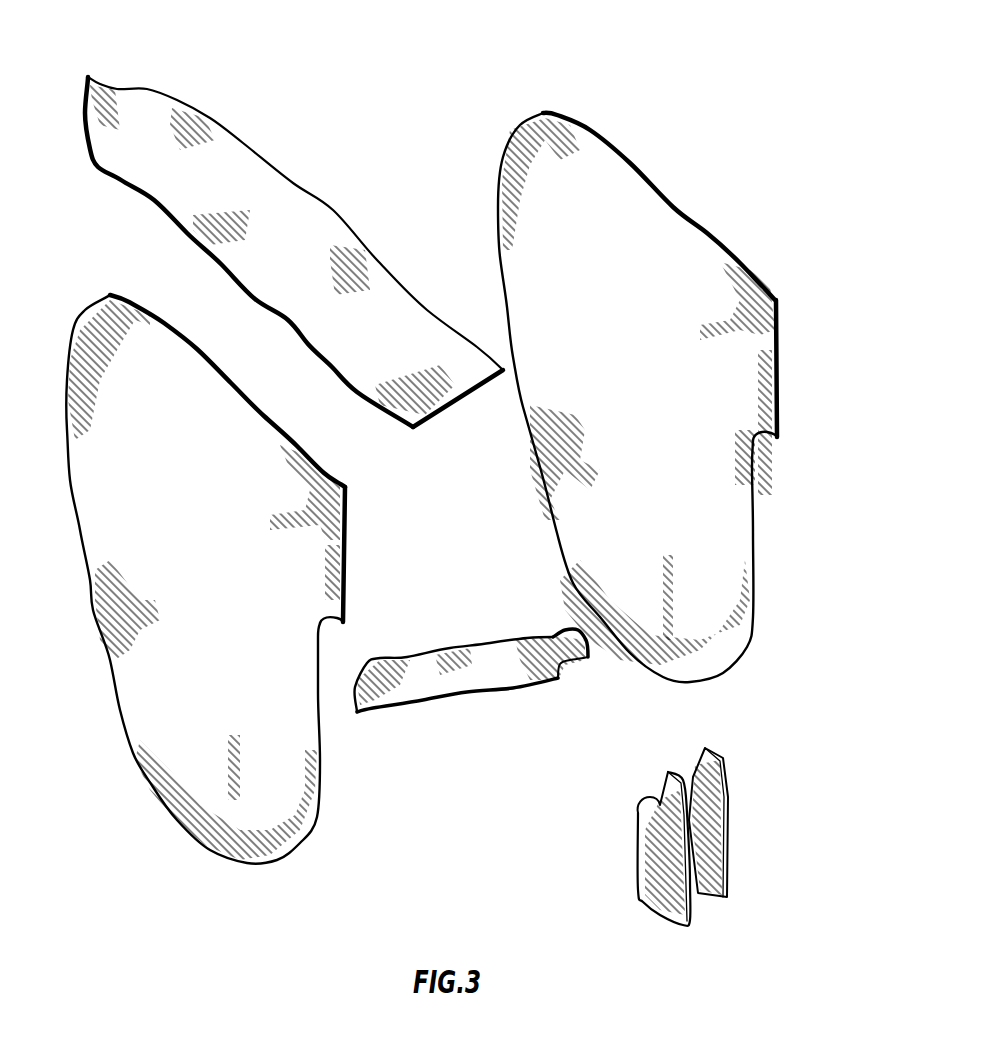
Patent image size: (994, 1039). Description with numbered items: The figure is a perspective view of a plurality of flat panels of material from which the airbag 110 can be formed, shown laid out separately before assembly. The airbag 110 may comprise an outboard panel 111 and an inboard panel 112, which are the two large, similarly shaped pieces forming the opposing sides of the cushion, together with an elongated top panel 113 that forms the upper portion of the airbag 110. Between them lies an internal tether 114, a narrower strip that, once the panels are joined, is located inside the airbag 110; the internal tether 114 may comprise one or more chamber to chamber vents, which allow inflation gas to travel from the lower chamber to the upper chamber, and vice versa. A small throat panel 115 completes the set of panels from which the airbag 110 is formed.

The airbag 110 is at (312, 83).
The outboard panel 111 is at (150, 700).
The inboard panel 112 is at (667, 283).
The top panel 113 is at (315, 250).
The internal tether 114 is at (473, 673).
The throat panel 115 is at (653, 860).